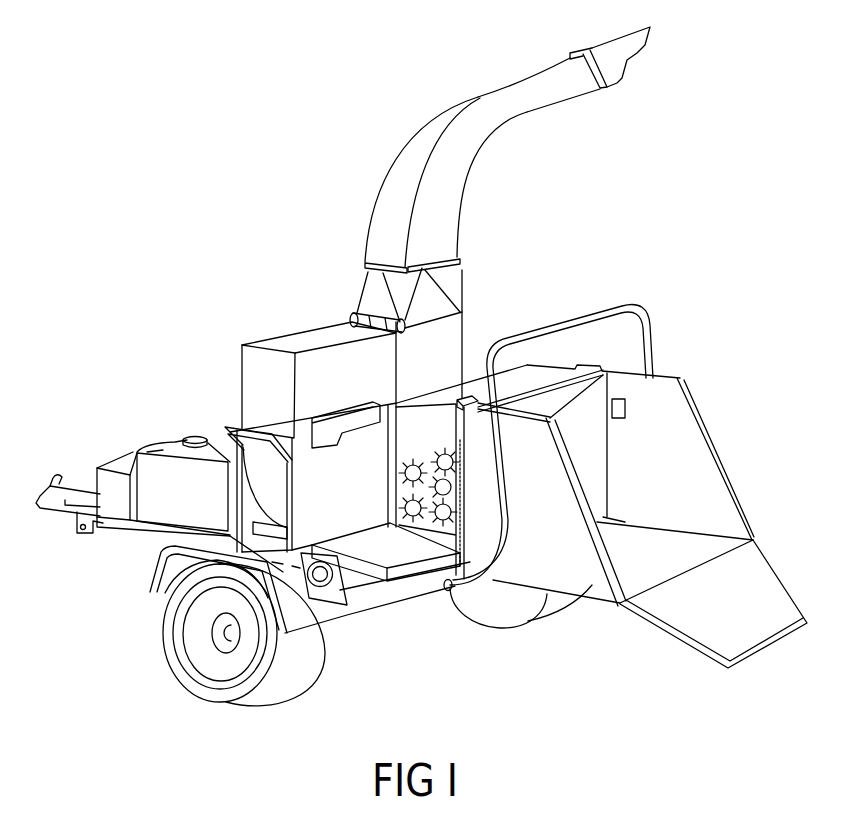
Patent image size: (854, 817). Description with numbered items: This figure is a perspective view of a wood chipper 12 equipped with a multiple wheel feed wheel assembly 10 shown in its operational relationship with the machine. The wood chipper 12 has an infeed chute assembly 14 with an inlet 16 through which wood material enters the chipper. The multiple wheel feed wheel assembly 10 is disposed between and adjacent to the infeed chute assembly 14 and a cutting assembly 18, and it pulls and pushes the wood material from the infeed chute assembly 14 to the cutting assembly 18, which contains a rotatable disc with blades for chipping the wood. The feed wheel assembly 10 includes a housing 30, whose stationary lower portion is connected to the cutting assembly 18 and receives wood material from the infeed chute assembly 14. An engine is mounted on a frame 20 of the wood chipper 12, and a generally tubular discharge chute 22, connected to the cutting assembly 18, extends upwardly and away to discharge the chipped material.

The multiple wheel feed wheel assembly 10 is at (512, 298).
The wood chipper 12 is at (378, 622).
The infeed chute assembly 14 is at (716, 455).
The inlet 16 is at (590, 424).
The cutting assembly 18 is at (252, 383).
The frame 20 is at (146, 523).
The discharge chute 22 is at (514, 97).
The housing 30 is at (427, 556).